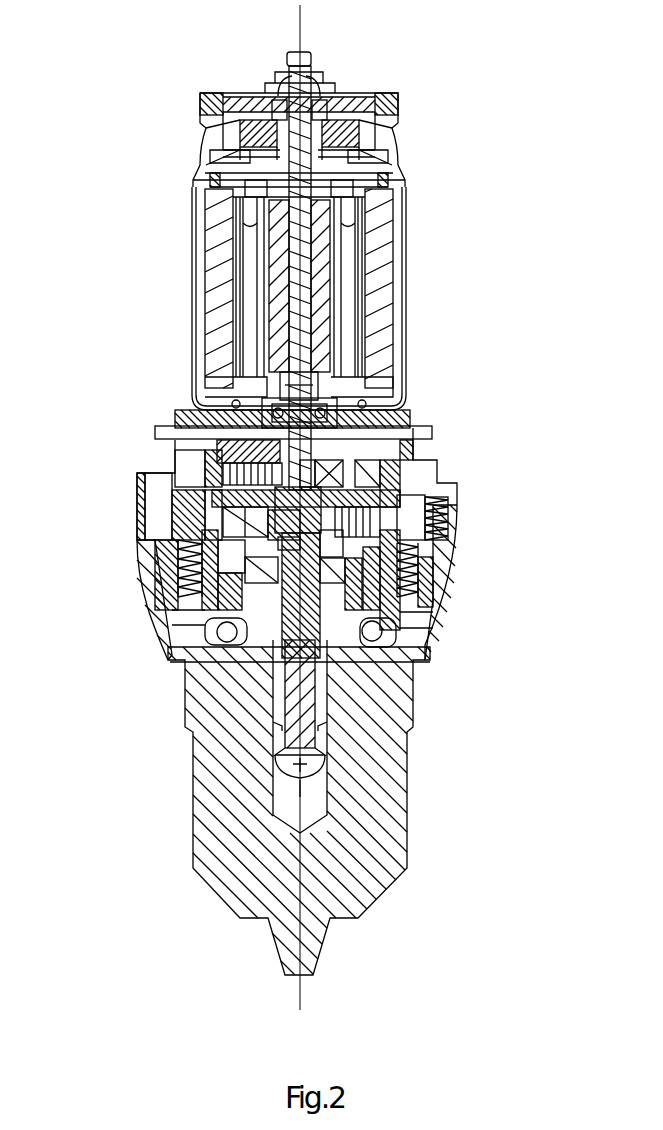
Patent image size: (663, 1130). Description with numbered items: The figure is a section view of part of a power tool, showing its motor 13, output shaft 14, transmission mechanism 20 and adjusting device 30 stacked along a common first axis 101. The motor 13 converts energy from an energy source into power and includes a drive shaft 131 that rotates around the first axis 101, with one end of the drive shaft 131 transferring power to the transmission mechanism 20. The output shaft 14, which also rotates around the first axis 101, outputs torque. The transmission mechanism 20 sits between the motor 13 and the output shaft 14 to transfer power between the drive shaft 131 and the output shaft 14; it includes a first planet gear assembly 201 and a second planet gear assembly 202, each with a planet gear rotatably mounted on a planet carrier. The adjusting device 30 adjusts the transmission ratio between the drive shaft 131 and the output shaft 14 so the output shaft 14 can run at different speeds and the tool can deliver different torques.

The first axis 101 is at (309, 20).
The motor 13 is at (383, 292).
The drive shaft 131 is at (295, 259).
The transmission mechanism 20 is at (414, 450).
The first planet gear assembly 201 is at (242, 436).
The adjusting device 30 is at (172, 437).
The second planet gear assembly 202 is at (456, 484).
The output shaft 14 is at (328, 710).